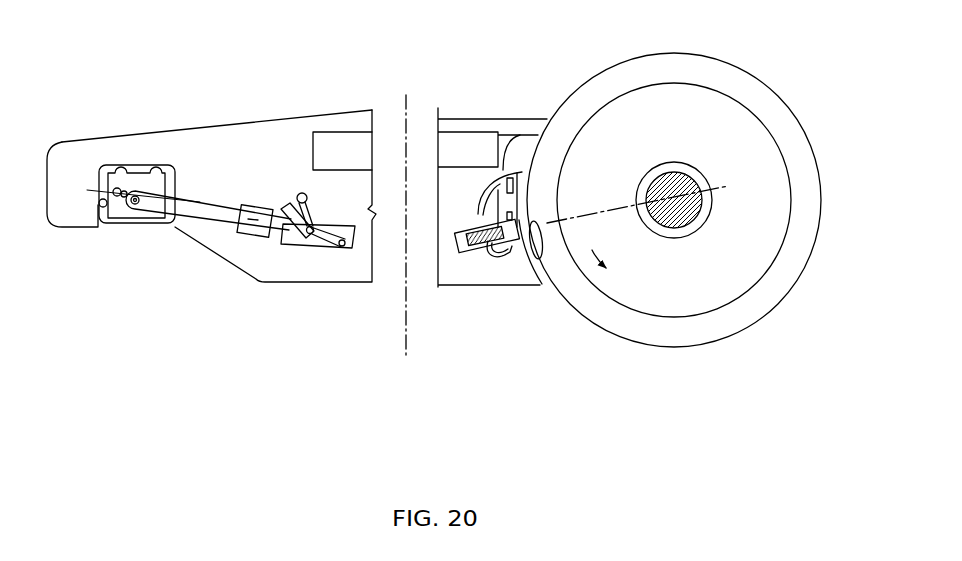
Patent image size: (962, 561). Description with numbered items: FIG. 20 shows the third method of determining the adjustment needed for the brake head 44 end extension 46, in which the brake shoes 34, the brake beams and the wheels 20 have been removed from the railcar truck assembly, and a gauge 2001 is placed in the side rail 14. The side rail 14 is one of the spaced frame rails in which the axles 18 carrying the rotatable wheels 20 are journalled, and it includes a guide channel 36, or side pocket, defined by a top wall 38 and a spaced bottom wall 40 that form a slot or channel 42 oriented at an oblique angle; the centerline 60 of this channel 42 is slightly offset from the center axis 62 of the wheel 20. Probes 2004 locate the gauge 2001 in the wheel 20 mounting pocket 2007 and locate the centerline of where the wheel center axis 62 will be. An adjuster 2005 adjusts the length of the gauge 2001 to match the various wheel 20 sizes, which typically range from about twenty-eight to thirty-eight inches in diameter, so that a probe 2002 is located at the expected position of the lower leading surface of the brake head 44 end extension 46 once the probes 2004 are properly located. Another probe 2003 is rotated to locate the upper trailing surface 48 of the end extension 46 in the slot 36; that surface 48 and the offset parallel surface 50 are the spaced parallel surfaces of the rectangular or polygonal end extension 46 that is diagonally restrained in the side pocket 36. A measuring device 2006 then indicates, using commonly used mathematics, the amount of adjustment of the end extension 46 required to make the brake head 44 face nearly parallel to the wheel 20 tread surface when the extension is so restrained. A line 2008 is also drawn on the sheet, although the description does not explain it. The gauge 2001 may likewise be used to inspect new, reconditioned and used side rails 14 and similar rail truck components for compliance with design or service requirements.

The frame rail 14 is at (247, 132).
The axle 18 is at (681, 178).
The wheel 20 is at (772, 93).
The brake shoe 34 is at (518, 170).
The guide channel 36 is at (334, 214).
The top wall 38 is at (468, 235).
The bottom wall 40 is at (470, 246).
The channel 42 is at (540, 260).
The brake head 44 is at (502, 164).
The end extension 46 is at (470, 242).
The upper trailing surface 48 is at (481, 210).
The parallel surface 50 is at (490, 262).
The centerline 60 is at (130, 212).
The center axis 62 is at (133, 210).
The gauge 2001 is at (197, 210).
The probe 2002 is at (335, 250).
The probe 2003 is at (315, 223).
The probes 2004 is at (85, 262).
The adjuster 2005 is at (252, 236).
The measuring device 2006 is at (306, 194).
The wheel mounting pocket 2007 is at (100, 165).
The section line 2008 is at (406, 333).